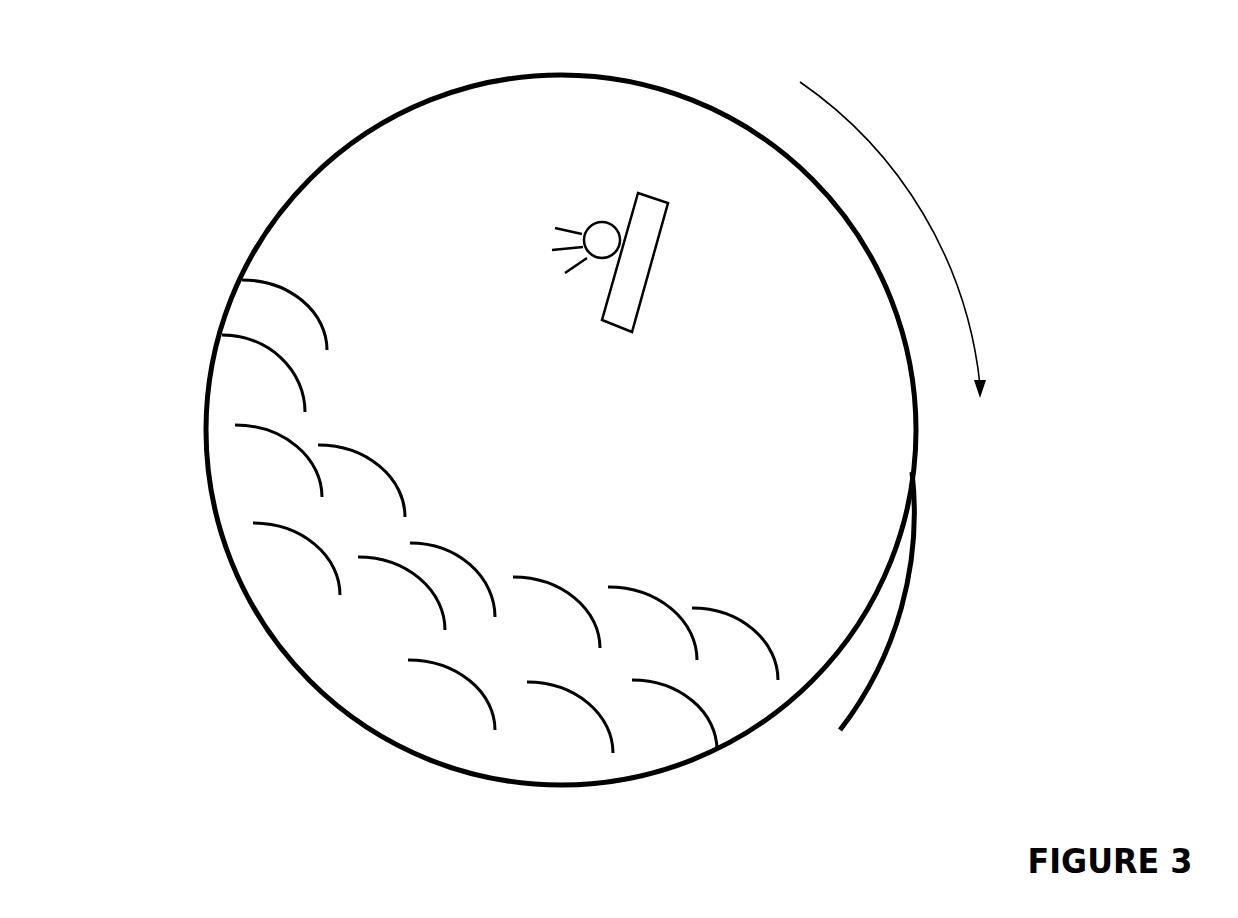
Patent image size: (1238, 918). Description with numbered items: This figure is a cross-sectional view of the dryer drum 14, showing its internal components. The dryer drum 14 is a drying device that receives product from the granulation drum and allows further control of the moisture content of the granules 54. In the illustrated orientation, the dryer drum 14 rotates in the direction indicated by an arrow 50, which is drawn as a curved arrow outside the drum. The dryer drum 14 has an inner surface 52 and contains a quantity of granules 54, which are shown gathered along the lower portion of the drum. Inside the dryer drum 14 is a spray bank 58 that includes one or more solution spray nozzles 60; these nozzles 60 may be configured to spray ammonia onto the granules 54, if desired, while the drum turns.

The dryer drum 14 is at (262, 178).
The arrow 50 is at (947, 217).
The inner surface 52 is at (900, 533).
The granules 54 is at (338, 663).
The spray bank 58 is at (652, 232).
The solution spray nozzles 60 is at (592, 220).